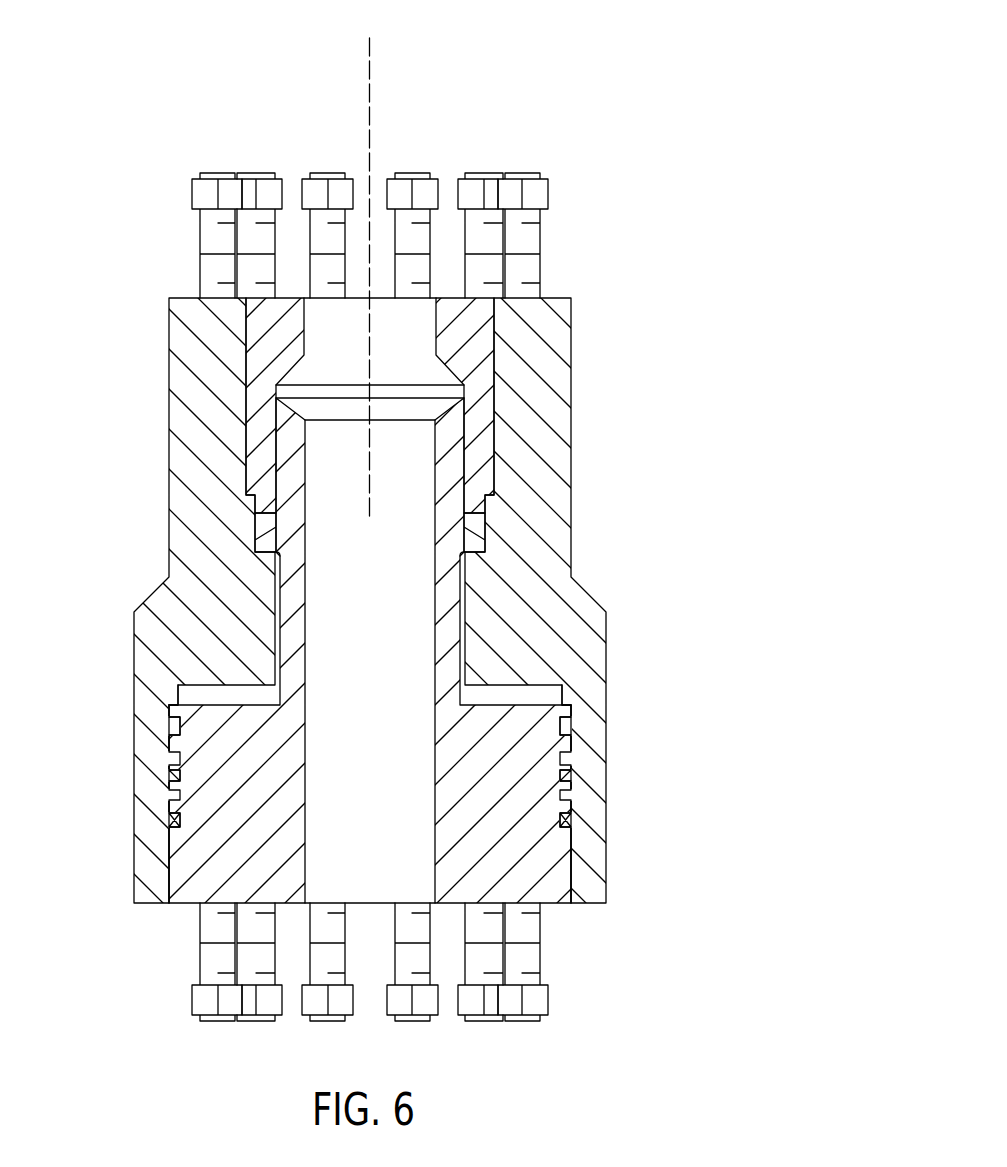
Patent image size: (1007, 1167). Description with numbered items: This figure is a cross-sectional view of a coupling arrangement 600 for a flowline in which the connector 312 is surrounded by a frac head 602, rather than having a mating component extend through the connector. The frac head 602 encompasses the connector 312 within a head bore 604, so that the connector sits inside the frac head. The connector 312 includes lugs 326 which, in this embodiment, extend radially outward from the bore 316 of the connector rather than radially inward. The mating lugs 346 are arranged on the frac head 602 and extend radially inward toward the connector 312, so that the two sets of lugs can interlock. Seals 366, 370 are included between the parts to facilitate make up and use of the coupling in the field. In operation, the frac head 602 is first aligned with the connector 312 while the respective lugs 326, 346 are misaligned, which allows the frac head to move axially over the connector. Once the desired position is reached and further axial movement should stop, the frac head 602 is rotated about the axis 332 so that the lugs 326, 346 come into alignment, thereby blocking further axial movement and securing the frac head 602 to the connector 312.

The coupling arrangement 600 is at (578, 54).
The axis 332 is at (369, 106).
The frac head 602 is at (199, 371).
The head bore 604 is at (178, 692).
The connector 312 is at (561, 760).
The bore 316 is at (437, 636).
The seal 370 is at (473, 553).
The mating lugs 346 is at (177, 735).
The lugs 326 is at (177, 770).
The seal 366 is at (175, 820).